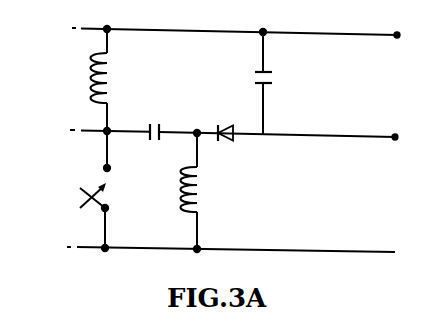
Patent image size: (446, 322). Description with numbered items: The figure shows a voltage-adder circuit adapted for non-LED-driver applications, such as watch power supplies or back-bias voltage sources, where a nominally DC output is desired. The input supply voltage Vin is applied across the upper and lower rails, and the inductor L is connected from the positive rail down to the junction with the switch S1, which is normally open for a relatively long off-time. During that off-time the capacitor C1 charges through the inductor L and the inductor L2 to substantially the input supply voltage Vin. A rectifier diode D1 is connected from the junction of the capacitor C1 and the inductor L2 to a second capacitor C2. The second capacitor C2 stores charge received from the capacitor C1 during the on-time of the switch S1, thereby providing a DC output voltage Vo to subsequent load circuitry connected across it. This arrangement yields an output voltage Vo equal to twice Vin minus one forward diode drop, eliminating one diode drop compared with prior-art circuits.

The inductor L is at (84, 80).
The switch S1 is at (111, 189).
The capacitor C1 is at (158, 116).
The rectifier diode D1 is at (227, 116).
The inductor L2 is at (207, 191).
The second capacitor C2 is at (283, 83).
The input supply voltage Vin is at (45, 217).
The output voltage Vo is at (398, 108).